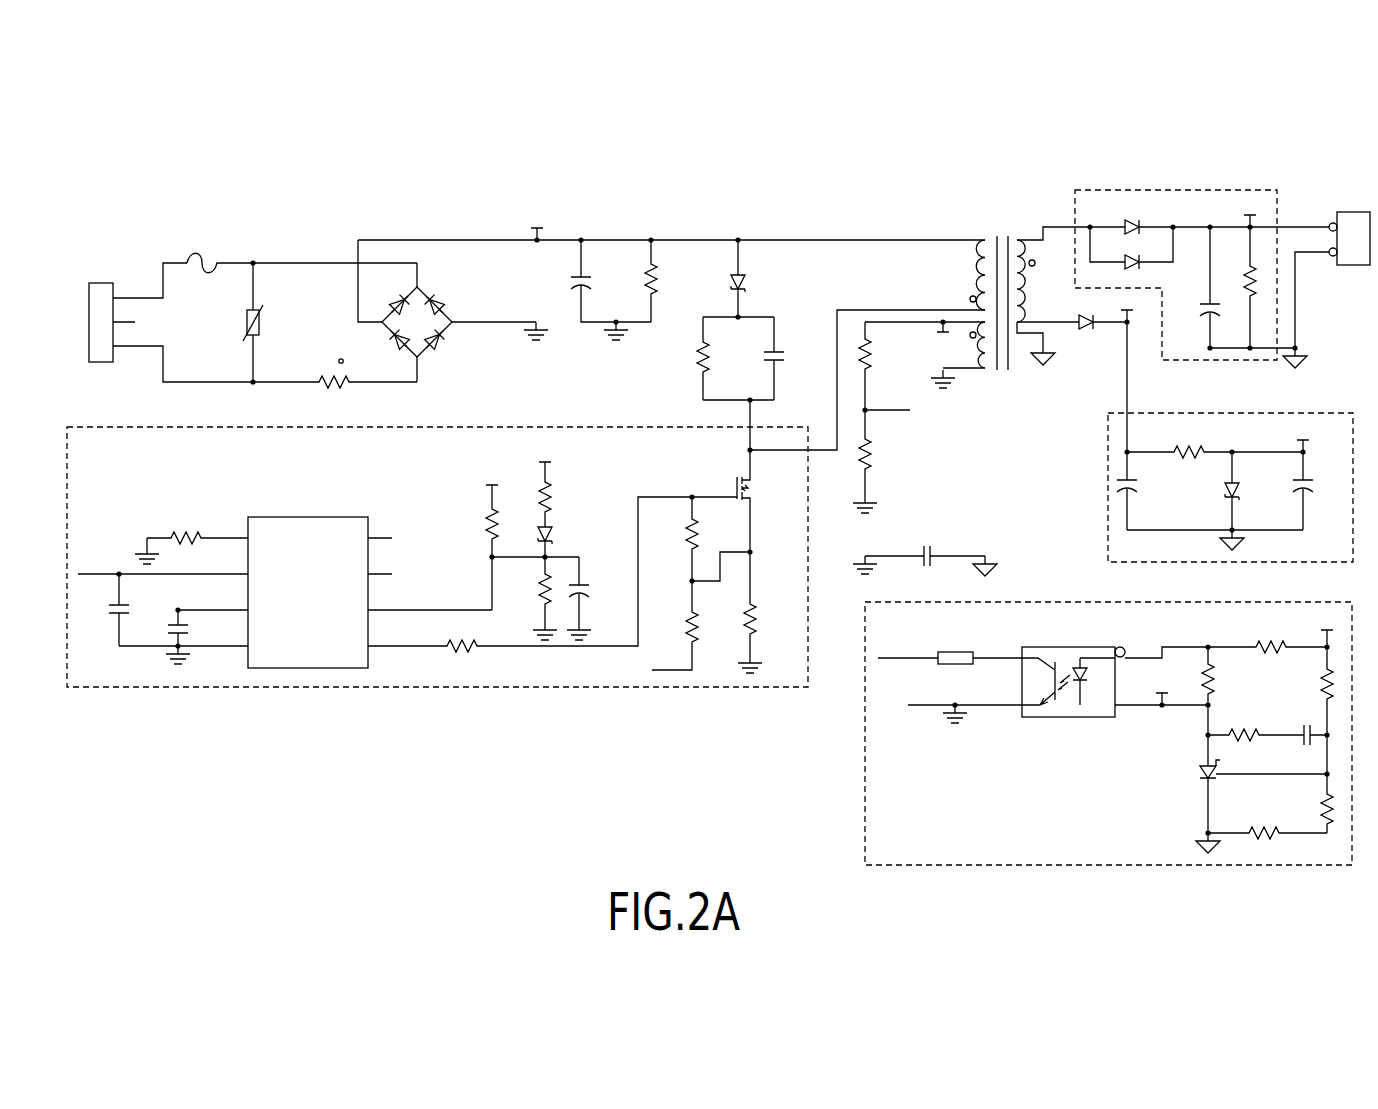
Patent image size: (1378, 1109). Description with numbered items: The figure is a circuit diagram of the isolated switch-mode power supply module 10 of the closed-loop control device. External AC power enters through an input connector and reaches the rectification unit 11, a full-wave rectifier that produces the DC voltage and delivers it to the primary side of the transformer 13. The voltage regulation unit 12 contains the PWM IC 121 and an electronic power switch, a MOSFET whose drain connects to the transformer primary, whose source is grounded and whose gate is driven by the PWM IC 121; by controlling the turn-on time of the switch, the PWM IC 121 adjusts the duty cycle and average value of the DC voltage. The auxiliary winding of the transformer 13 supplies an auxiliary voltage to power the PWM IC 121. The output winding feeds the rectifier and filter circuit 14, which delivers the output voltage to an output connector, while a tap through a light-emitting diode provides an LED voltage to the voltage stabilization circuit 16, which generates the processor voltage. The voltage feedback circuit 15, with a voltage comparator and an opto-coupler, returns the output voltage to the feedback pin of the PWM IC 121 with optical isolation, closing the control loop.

The isolated switch-mode power supply module 10 is at (1272, 182).
The rectification unit 11 is at (436, 336).
The voltage regulation unit 12 is at (452, 687).
The PWM IC 121 is at (300, 517).
The transformer 13 is at (1018, 238).
The rectifier and filter circuit 14 is at (1187, 185).
The voltage feedback circuit 15 is at (864, 761).
The voltage stabilization circuit 16 is at (1108, 513).